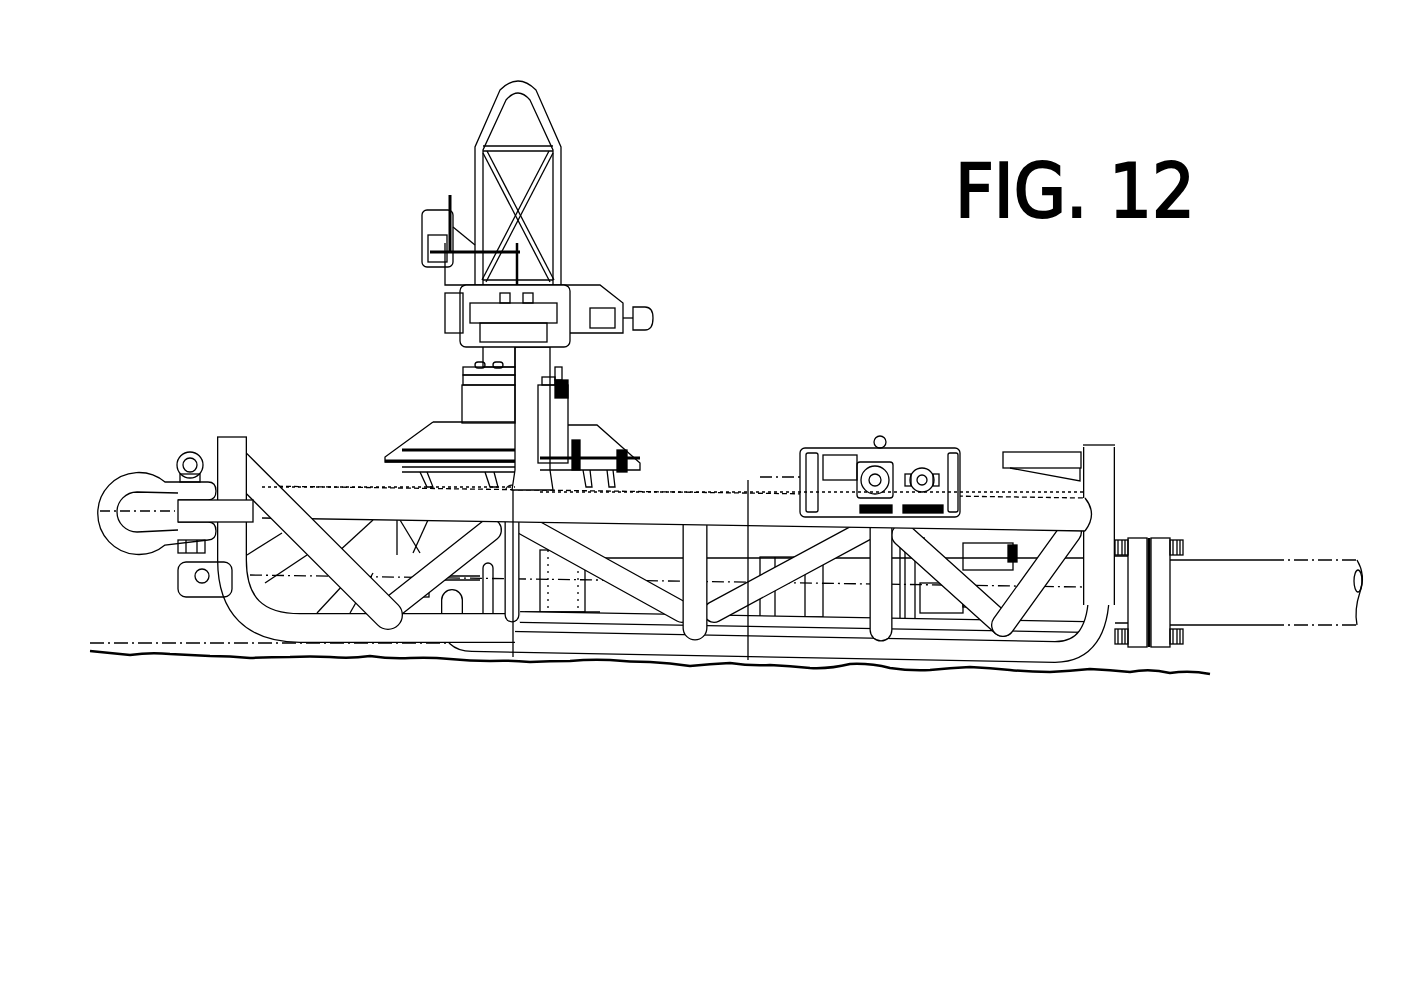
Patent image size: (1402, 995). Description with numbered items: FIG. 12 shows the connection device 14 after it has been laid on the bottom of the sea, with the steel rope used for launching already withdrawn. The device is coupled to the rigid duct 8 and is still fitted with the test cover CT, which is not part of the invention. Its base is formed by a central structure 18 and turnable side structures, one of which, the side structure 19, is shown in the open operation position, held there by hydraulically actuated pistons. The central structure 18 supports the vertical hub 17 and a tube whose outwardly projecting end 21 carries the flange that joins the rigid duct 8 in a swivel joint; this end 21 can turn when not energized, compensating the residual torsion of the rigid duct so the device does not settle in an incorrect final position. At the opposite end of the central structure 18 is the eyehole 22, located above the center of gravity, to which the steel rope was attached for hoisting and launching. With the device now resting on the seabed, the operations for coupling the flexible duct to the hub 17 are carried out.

The test cover CT is at (565, 190).
The connection device 14 is at (666, 549).
The vertical hub 17 is at (452, 371).
The central structure 18 is at (358, 625).
The side structure 19 is at (805, 642).
The end of the tube 21 is at (1137, 538).
The eyehole 22 is at (197, 508).
The rigid duct 8 is at (1235, 577).